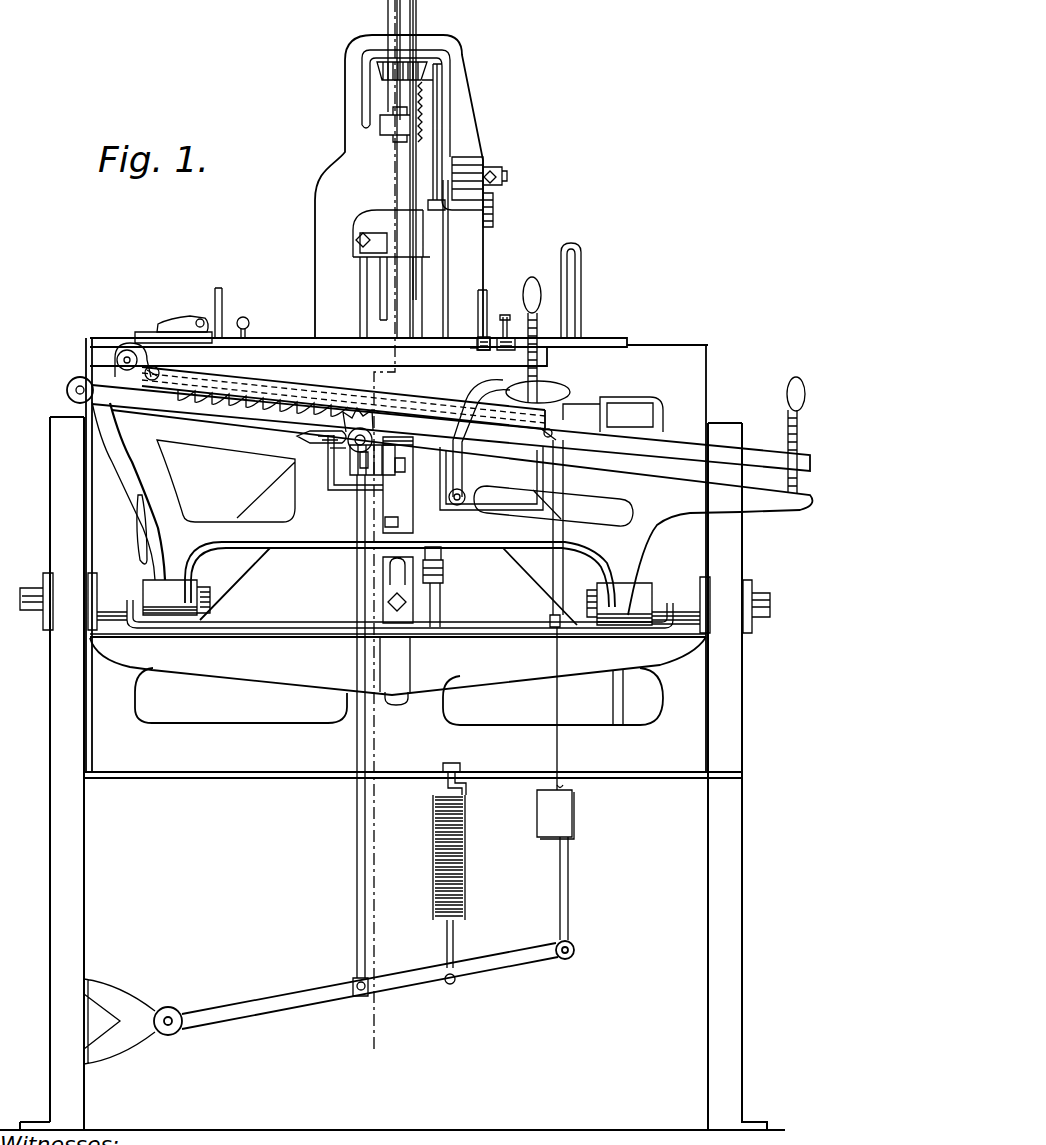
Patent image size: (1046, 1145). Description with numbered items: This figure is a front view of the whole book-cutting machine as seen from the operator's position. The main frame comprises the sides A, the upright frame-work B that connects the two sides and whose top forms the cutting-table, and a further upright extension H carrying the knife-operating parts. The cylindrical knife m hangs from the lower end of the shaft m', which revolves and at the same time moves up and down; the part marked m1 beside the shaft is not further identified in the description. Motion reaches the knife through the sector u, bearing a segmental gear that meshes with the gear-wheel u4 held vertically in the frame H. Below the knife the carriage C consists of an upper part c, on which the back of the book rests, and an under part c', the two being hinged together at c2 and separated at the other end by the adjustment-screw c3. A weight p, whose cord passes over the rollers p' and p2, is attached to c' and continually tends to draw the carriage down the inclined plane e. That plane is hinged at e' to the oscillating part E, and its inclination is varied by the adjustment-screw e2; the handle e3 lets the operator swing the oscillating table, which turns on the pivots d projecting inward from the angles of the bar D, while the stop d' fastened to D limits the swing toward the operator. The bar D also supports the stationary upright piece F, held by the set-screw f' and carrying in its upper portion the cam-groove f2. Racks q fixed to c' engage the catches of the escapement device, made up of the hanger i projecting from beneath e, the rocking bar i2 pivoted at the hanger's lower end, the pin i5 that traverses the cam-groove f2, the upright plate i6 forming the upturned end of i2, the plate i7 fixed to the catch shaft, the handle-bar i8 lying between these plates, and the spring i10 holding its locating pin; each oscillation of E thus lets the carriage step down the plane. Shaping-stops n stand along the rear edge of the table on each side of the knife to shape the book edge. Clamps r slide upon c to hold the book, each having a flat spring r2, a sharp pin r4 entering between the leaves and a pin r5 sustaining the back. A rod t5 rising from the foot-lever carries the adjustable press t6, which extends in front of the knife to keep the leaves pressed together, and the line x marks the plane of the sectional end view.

The sides A is at (392, 773).
The upright frame-work B is at (413, 564).
The carriage C is at (432, 395).
The upper part of carriage c is at (358, 302).
The under part of carriage c' is at (343, 395).
The hinge c2 is at (128, 360).
The adjustment-screw c3 is at (531, 331).
The bar D is at (398, 671).
The pivots d is at (395, 599).
The stop d' is at (448, 587).
The oscillating part E is at (451, 518).
The inclined plane e is at (451, 428).
The hinge e' is at (71, 386).
The adjustment-screw e2 is at (786, 435).
The handle e3 is at (545, 391).
The stationary upright piece F is at (435, 472).
The set-screw f' is at (383, 590).
The cam-groove f2 is at (391, 522).
The upright extension H is at (399, 186).
The hanger i is at (348, 467).
The rocking bar i2 is at (360, 461).
The pin i5 is at (382, 468).
The plate i6 is at (355, 430).
The plate i7 is at (316, 451).
The handle-bar i8 is at (297, 437).
The spring i10 is at (330, 455).
The knife m is at (392, 259).
The shaft m' is at (410, 169).
The bracket m1 is at (402, 220).
The shaping-stops n is at (420, 316).
The weight p is at (441, 627).
The roller p' is at (542, 613).
The roller p2 is at (541, 521).
The racks q is at (176, 395).
The clamps r is at (202, 313).
The flat spring r2 is at (513, 326).
The sharp pin r4 is at (478, 338).
The pin r5 is at (472, 349).
The rod t5 is at (357, 912).
The press piece t6 is at (373, 241).
The sector u is at (437, 92).
The gear-wheel u4 is at (378, 72).
The section line x is at (380, 535).